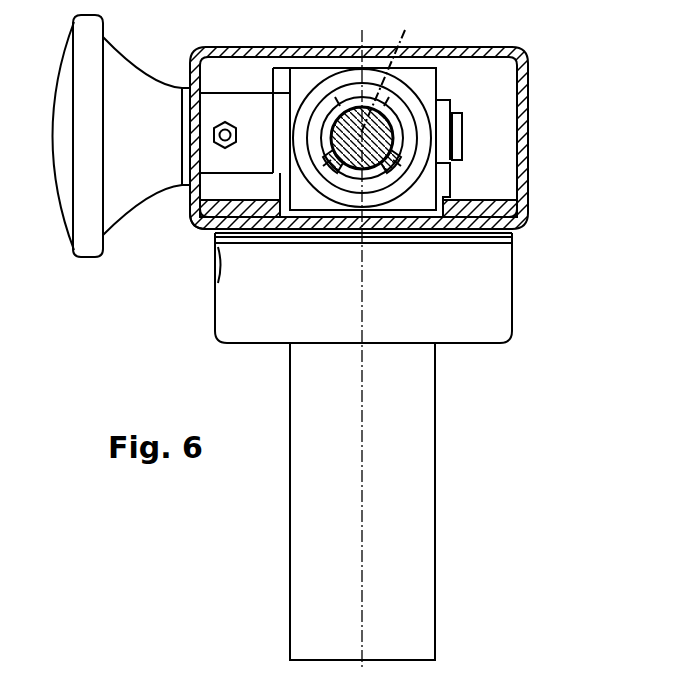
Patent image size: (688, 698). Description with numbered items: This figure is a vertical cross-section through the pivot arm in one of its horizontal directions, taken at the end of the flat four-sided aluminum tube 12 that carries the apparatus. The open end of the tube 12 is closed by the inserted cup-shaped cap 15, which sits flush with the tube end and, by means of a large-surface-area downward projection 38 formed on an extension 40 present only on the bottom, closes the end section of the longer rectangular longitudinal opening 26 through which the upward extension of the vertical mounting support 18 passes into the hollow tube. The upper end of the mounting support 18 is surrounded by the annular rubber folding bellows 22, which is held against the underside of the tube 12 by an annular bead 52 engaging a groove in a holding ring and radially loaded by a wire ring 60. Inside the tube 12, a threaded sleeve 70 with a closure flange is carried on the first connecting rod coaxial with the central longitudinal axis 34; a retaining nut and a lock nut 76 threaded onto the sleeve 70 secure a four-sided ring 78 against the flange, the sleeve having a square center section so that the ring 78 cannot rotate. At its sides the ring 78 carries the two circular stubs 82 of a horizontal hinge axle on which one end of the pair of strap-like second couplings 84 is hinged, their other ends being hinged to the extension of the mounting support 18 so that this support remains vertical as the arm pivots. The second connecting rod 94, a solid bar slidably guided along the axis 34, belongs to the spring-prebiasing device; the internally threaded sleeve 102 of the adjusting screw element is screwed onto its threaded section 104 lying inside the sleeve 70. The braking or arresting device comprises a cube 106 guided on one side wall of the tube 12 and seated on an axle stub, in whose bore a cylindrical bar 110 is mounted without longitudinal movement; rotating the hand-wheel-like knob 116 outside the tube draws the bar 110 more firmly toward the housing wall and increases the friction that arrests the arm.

The four-sided tube 12 is at (470, 38).
The cap 15 is at (494, 200).
The mounting support 18 is at (436, 468).
The folding bellows 22 is at (505, 338).
The longitudinal opening 26 is at (455, 202).
The central longitudinal axis 34 is at (399, 74).
The downward projection 38 is at (362, 349).
The extension 40 is at (192, 218).
The annular bead 52 is at (215, 281).
The wire ring 60 is at (512, 238).
The threaded sleeve 70 is at (372, 170).
The lock nut 76 is at (346, 78).
The four-sided ring 78 is at (306, 76).
The circular stub 82 is at (464, 131).
The second couplings 84 is at (278, 112).
The second connecting rod 94 is at (392, 172).
The sleeve 102 is at (326, 172).
The threaded section 104 is at (350, 165).
The cube 106 is at (212, 228).
The cylindrical bar 110 is at (229, 121).
The rotary knob 116 is at (92, 250).